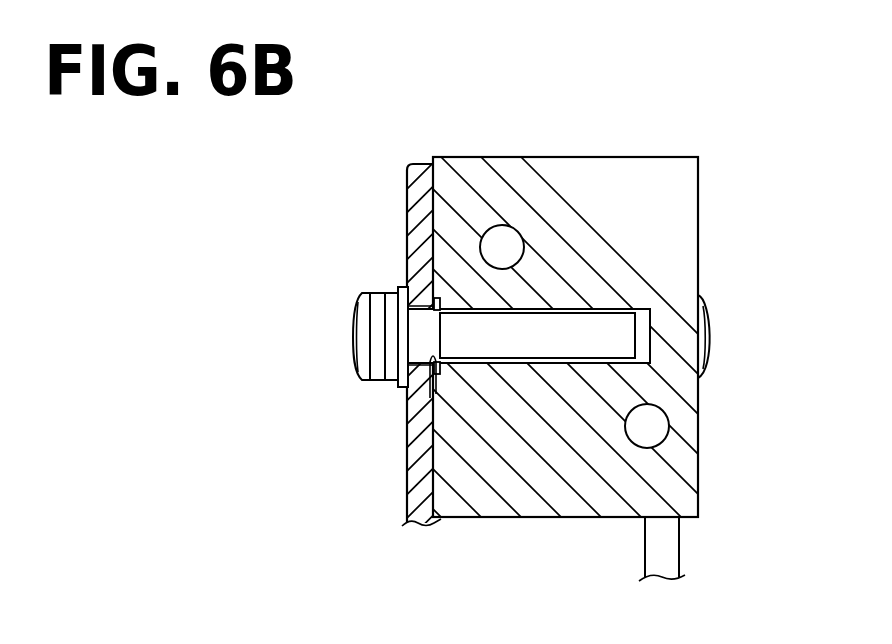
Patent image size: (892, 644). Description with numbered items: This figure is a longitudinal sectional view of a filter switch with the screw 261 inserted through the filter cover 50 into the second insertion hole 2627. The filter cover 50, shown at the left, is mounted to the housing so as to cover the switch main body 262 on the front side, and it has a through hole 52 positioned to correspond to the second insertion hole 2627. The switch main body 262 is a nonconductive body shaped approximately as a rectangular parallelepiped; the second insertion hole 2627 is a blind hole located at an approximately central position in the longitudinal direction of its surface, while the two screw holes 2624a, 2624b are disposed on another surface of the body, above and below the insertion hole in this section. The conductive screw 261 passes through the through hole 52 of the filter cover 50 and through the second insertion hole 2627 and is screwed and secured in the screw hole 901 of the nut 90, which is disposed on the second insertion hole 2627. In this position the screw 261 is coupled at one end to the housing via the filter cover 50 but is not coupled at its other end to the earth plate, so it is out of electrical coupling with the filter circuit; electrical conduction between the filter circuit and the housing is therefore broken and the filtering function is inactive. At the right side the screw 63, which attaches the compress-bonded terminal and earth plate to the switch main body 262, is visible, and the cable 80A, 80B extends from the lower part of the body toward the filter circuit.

The filter cover 50 is at (423, 152).
The switch main body 262 is at (568, 147).
The screw hole 2624a is at (486, 236).
The screw hole 2624b is at (668, 418).
The through hole 52 is at (404, 312).
The screw 261 is at (362, 337).
The second insertion hole 2627 is at (531, 364).
The screw 63 is at (703, 335).
The nut 90 is at (447, 379).
The screw hole 901 is at (431, 398).
The cable 80A is at (729, 549).
The cable 80B is at (672, 543).